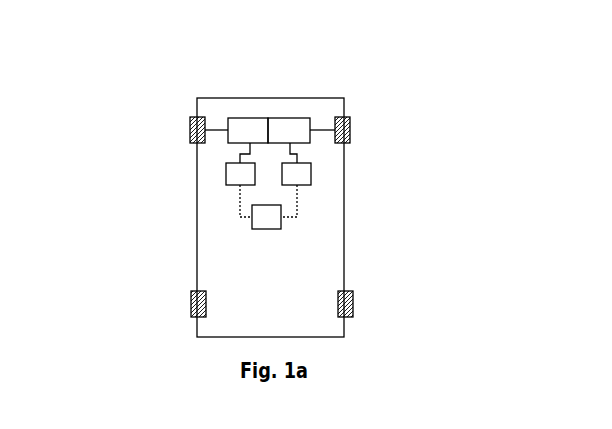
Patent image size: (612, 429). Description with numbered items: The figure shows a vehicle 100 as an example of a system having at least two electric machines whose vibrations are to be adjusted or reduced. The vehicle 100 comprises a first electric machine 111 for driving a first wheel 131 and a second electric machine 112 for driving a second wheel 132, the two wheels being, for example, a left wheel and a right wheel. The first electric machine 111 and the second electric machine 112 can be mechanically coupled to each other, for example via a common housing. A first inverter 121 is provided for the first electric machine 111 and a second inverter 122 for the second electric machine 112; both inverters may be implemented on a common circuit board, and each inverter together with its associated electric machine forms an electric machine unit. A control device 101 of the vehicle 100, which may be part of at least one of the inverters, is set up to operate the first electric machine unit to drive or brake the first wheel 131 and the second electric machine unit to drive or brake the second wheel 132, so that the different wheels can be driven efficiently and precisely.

The vehicle 100 is at (145, 93).
The control device 101 is at (268, 229).
The first electric machine 111 is at (238, 118).
The second electric machine 112 is at (292, 118).
The first inverter 121 is at (226, 175).
The second inverter 122 is at (311, 175).
The first wheel 131 is at (190, 128).
The second wheel 132 is at (350, 127).